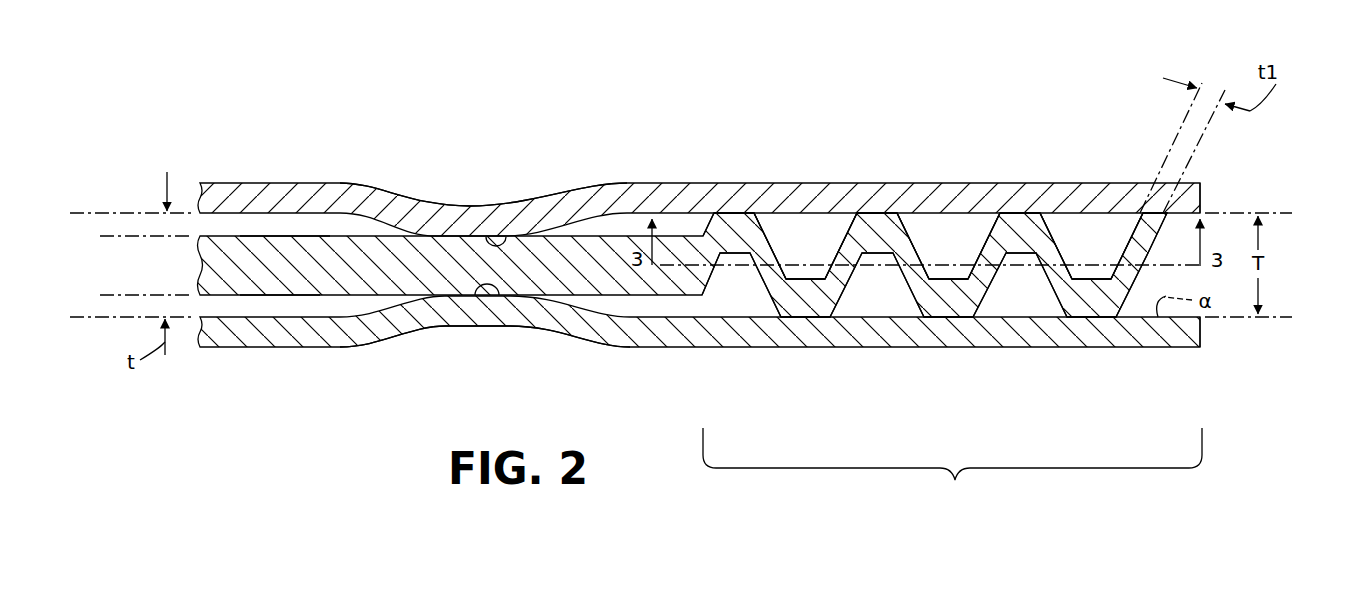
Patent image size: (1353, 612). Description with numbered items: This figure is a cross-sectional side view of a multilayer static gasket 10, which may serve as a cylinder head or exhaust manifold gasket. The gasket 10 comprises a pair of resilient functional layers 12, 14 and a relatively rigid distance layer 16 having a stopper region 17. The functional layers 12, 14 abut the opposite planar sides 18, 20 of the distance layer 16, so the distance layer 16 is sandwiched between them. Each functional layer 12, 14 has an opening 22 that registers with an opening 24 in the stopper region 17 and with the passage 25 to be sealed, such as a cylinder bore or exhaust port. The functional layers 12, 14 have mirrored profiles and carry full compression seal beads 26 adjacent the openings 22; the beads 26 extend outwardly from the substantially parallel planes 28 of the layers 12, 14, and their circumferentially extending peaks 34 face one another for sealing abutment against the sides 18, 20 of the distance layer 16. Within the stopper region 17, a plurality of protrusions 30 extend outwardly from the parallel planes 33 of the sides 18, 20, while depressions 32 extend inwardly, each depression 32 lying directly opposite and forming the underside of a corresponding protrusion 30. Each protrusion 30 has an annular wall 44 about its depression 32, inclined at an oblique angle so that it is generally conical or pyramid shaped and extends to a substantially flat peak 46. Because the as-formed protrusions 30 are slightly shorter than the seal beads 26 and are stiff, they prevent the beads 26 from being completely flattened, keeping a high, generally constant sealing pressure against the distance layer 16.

The multilayer static gasket 10 is at (169, 118).
The functional layer 12 is at (230, 183).
The functional layer 14 is at (222, 350).
The distance layer 16 is at (210, 273).
The stopper region 17 is at (952, 364).
The side of the distance layer 18 is at (345, 234).
The side of the distance layer 20 is at (329, 298).
The opening 22 is at (1203, 200).
The opening 24 is at (1198, 182).
The passage 25 is at (1300, 281).
The full compression seal bead 26 is at (440, 220).
The parallel plane 28 is at (102, 212).
The protrusion 30 is at (733, 224).
The depression 32 is at (812, 243).
The parallel plane 33 is at (121, 236).
The peak 34 is at (497, 241).
The annular wall 44 is at (840, 247).
The peak 46 is at (745, 211).